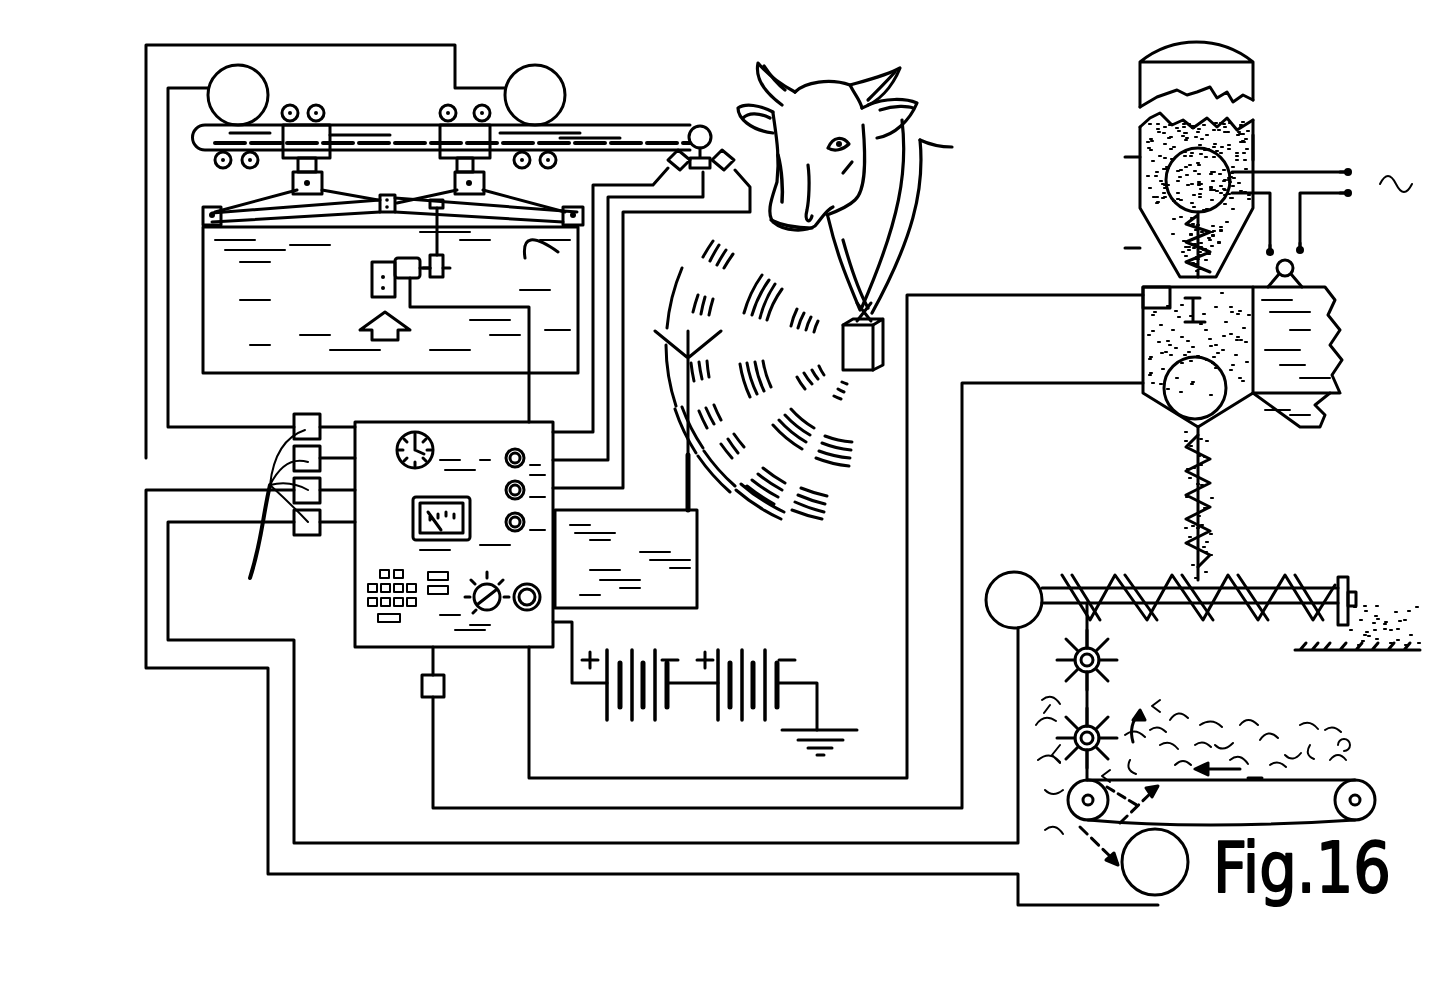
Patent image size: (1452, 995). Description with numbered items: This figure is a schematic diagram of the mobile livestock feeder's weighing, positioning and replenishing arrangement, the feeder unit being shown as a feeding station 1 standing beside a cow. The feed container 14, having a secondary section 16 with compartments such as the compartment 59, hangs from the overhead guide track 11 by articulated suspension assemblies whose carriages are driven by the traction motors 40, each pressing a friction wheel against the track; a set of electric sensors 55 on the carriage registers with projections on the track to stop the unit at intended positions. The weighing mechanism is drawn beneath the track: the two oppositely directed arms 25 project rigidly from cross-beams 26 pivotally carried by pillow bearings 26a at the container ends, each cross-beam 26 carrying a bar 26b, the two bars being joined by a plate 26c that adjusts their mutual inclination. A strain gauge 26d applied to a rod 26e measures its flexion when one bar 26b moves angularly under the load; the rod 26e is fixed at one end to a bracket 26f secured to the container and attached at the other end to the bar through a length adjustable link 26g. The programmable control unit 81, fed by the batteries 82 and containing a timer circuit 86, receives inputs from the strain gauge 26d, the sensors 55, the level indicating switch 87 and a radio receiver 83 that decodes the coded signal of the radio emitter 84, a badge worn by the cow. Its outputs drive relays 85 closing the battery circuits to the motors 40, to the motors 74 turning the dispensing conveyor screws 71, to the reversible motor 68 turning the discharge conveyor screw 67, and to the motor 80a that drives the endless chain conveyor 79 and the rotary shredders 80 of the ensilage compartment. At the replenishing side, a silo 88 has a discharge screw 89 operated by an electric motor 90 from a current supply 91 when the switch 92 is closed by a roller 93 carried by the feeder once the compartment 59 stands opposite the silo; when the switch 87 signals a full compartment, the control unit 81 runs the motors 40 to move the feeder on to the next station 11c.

The motor 40 is at (240, 64).
The overhead guide track 11 is at (625, 128).
The electric sensors 55 is at (722, 150).
The bar 26b is at (348, 203).
The plate 26c is at (383, 195).
The cross-beam 26 is at (205, 222).
The arm 25 is at (270, 190).
The pillow bearings 26a is at (200, 218).
The container 14 is at (205, 318).
The bracket 26f is at (372, 277).
The strain gauge 26d is at (400, 298).
The rod 26e is at (447, 268).
The length adjustable link 26g is at (547, 260).
The programmable control unit 81 is at (380, 550).
The timer circuit 86 is at (408, 432).
The relays 85 is at (269, 512).
The radio receiver 83 is at (700, 598).
The batteries 82 is at (641, 650).
The radio emitter 84 is at (862, 373).
The silo 88 is at (1253, 135).
The discharge screw 89 is at (1150, 262).
The electric motor 90 is at (1140, 156).
The station 11c is at (1262, 150).
The current supply 91 is at (1348, 168).
The switch 92 is at (1302, 252).
The roller 93 is at (1294, 265).
The dividing wall 59 is at (1143, 345).
The level indicating switch 87 is at (1143, 290).
The motor 74 is at (1143, 400).
The secondary section 16 is at (1340, 315).
The feeding station 1 is at (1340, 368).
The conveyor screw 71 is at (1200, 500).
The electric motor 68 is at (1014, 572).
The discharge conveyor screw 67 is at (1095, 565).
The rotary shredders 80 is at (1140, 686).
The motor 80a is at (1190, 855).
The endless chain conveyor 79 is at (1293, 782).